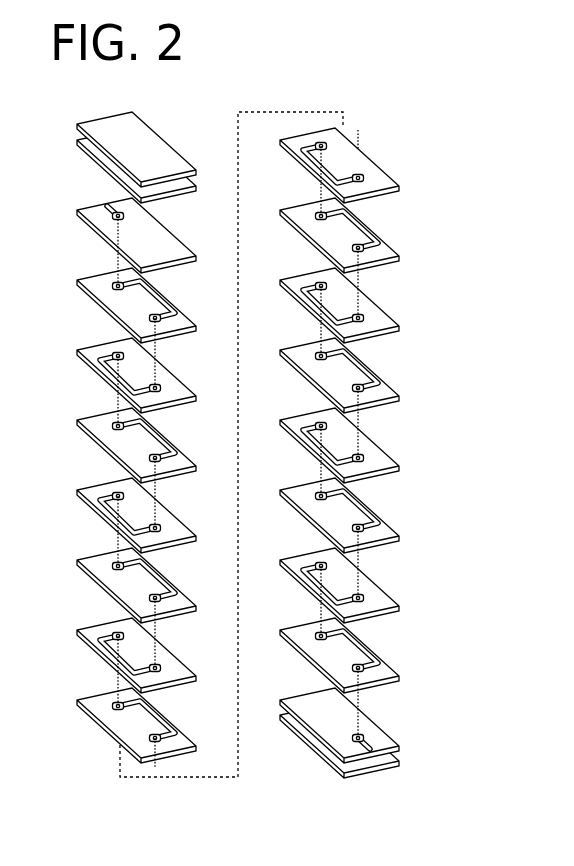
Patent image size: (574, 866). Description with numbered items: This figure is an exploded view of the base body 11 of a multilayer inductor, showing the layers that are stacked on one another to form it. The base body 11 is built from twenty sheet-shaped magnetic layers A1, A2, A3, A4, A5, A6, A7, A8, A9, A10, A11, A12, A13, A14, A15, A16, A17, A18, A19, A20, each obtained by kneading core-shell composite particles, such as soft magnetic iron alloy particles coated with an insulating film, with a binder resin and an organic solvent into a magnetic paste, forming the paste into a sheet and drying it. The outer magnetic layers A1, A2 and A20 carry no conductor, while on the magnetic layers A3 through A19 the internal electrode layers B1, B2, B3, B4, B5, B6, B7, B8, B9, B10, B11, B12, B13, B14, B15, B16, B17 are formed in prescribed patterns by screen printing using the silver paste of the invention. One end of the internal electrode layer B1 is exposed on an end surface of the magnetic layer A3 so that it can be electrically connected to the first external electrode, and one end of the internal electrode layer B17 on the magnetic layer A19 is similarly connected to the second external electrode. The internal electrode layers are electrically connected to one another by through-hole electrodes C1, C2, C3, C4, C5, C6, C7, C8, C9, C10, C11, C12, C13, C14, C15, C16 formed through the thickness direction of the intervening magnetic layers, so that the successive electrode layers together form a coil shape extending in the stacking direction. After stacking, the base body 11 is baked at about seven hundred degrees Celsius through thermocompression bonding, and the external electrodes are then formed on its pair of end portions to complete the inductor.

The base body 11 is at (185, 125).
The magnetic layer A1 is at (196, 170).
The magnetic layer A2 is at (196, 186).
The magnetic layer A3 is at (196, 256).
The magnetic layer A4 is at (196, 326).
The magnetic layer A5 is at (196, 396).
The magnetic layer A6 is at (196, 466).
The magnetic layer A7 is at (196, 536).
The magnetic layer A8 is at (196, 606).
The magnetic layer A9 is at (196, 676).
The magnetic layer A10 is at (196, 746).
The magnetic layer A11 is at (280, 142).
The magnetic layer A12 is at (280, 212).
The magnetic layer A13 is at (280, 282).
The magnetic layer A14 is at (280, 352).
The magnetic layer A15 is at (280, 422).
The magnetic layer A16 is at (280, 492).
The magnetic layer A17 is at (280, 562).
The magnetic layer A18 is at (280, 632).
The magnetic layer A19 is at (280, 702).
The magnetic layer A20 is at (280, 717).
The internal electrode layer B1 is at (105, 206).
The internal electrode layer B2 is at (140, 297).
The internal electrode layer B3 is at (100, 373).
The internal electrode layer B4 is at (140, 437).
The internal electrode layer B5 is at (100, 513).
The internal electrode layer B6 is at (140, 577).
The internal electrode layer B7 is at (100, 653).
The internal electrode layer B8 is at (140, 717).
The internal electrode layer B9 is at (330, 168).
The internal electrode layer B10 is at (368, 217).
The internal electrode layer B11 is at (330, 308).
The internal electrode layer B12 is at (368, 357).
The internal electrode layer B13 is at (330, 448).
The internal electrode layer B14 is at (368, 497).
The internal electrode layer B15 is at (330, 588).
The internal electrode layer B16 is at (368, 637).
The internal electrode layer B17 is at (374, 747).
The through-hole electrode C1 is at (116, 259).
The through-hole electrode C2 is at (158, 345).
The through-hole electrode C3 is at (116, 399).
The through-hole electrode C4 is at (158, 485).
The through-hole electrode C5 is at (116, 539).
The through-hole electrode C6 is at (158, 625).
The through-hole electrode C7 is at (116, 679).
The through-hole electrode C8 is at (160, 768).
The through-hole electrode C9 is at (319, 191).
The through-hole electrode C10 is at (362, 273).
The through-hole electrode C11 is at (319, 331).
The through-hole electrode C12 is at (362, 413).
The through-hole electrode C13 is at (319, 471).
The through-hole electrode C14 is at (362, 553).
The through-hole electrode C15 is at (319, 611).
The through-hole electrode C16 is at (362, 693).